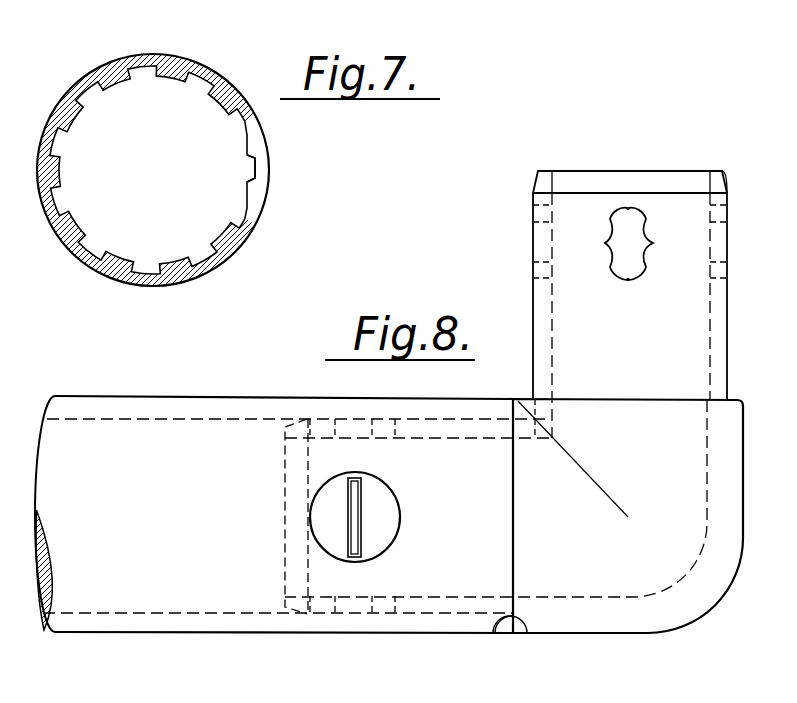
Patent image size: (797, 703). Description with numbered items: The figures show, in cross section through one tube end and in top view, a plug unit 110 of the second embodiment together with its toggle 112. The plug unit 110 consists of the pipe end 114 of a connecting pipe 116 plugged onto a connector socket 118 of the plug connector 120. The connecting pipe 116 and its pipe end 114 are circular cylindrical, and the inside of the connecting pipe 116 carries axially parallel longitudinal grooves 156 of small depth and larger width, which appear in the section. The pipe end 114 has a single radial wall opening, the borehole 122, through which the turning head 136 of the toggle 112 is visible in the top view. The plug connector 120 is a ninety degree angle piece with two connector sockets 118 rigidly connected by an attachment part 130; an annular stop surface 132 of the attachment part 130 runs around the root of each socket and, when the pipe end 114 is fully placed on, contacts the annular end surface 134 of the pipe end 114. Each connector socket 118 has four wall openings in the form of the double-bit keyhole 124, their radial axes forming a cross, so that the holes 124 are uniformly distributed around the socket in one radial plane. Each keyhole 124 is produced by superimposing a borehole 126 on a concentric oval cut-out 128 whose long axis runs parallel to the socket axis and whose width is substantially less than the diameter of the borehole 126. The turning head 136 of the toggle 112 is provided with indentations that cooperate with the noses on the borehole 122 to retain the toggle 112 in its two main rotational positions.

In FIG. 8, the plug unit 110 is at (389, 402).
In FIG. 8, the toggle 112 is at (410, 506).
In FIG. 7, the pipe end 114 is at (216, 69).
In FIG. 8, the pipe end 114 is at (327, 396).
In FIG. 8, the connecting pipe 116 is at (136, 641).
In FIG. 8, the connector socket 118 is at (614, 166).
In FIG. 8, the plug connector 120 is at (452, 357).
In FIG. 7, the borehole 122 is at (265, 128).
In FIG. 8, the borehole 122 is at (391, 510).
In FIG. 7, the double-bit keyhole 124 is at (269, 183).
In FIG. 8, the double-bit keyhole 124 is at (610, 206).
In FIG. 8, the borehole 126 is at (607, 244).
In FIG. 8, the oval cut-out 128 is at (629, 206).
In FIG. 8, the attachment part 130 is at (651, 638).
In FIG. 8, the annular stop surface 132 is at (737, 393).
In FIG. 8, the annular end surface 134 is at (495, 629).
In FIG. 8, the turning head 136 is at (380, 491).
In FIG. 7, the longitudinal grooves 156 is at (150, 73).